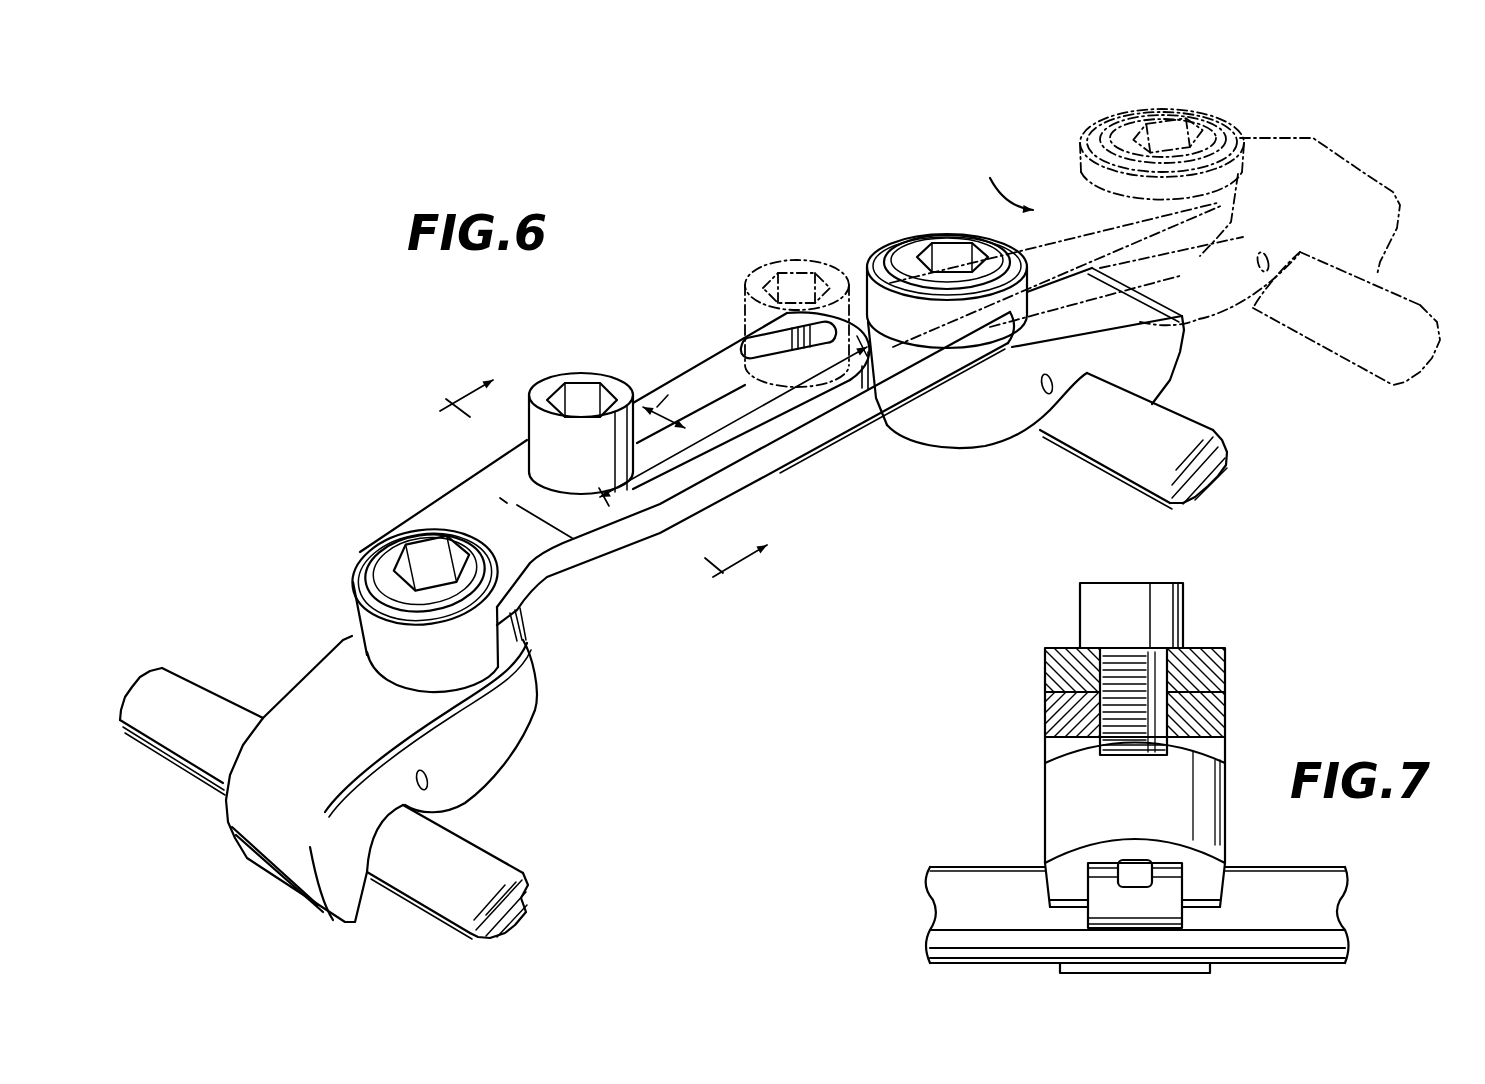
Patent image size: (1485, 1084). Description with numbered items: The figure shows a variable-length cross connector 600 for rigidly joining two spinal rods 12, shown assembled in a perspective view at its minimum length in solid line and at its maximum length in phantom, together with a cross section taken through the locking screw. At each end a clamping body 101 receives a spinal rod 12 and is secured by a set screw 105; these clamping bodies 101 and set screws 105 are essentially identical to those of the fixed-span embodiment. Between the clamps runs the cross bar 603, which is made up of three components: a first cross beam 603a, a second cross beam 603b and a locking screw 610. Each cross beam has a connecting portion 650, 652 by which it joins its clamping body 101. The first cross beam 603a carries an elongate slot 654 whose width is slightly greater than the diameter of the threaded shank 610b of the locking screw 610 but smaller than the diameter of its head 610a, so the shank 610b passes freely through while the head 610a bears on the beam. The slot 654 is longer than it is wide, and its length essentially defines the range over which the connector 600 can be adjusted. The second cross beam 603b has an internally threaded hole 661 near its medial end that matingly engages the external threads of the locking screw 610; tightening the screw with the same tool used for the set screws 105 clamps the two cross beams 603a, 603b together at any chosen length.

In FIG. 6, the cross connector 600 is at (620, 300).
In FIG. 6, the clamping body 101 is at (485, 734).
In FIG. 6, the spinal rod 12 is at (473, 843).
In FIG. 6, the set screw 105 is at (403, 547).
In FIG. 6, the connecting portion 650 is at (372, 633).
In FIG. 6, the connecting portion 652 is at (1080, 157).
In FIG. 6, the cross bar 603 is at (828, 380).
In FIG. 6, the first cross beam 603a is at (543, 580).
In FIG. 7, the first cross beam 603a is at (1213, 673).
In FIG. 6, the second cross beam 603b is at (790, 453).
In FIG. 6, the elongate slot 654 is at (733, 360).
In FIG. 6, the locking screw 610 is at (644, 344).
In FIG. 7, the locking screw 610 is at (1146, 660).
In FIG. 6, the head 610a is at (754, 298).
In FIG. 7, the head 610a is at (1180, 603).
In FIG. 6, the threaded shank 610b is at (585, 392).
In FIG. 7, the threaded shank 610b is at (1113, 653).
In FIG. 7, the internally threaded hole 661 is at (1110, 690).